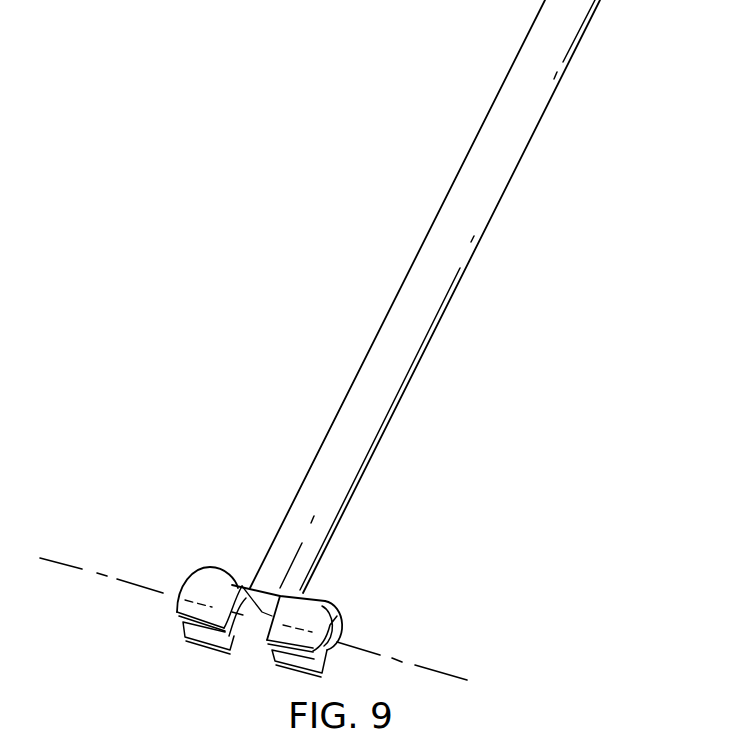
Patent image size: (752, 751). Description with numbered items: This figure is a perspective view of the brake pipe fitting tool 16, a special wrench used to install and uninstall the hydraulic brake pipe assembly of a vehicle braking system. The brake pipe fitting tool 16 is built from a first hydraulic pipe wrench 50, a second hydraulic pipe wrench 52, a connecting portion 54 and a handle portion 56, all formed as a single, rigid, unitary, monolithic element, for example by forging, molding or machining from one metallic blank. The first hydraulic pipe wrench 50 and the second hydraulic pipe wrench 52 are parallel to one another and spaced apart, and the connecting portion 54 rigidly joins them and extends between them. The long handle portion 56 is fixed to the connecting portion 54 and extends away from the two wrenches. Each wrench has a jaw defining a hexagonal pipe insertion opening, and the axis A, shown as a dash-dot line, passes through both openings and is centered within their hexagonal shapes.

The brake pipe fitting tool 16 is at (418, 296).
The first hydraulic pipe wrench 50 is at (205, 583).
The second hydraulic pipe wrench 52 is at (298, 621).
The connecting portion 54 is at (263, 583).
The handle portion 56 is at (365, 417).
The axis A is at (57, 568).